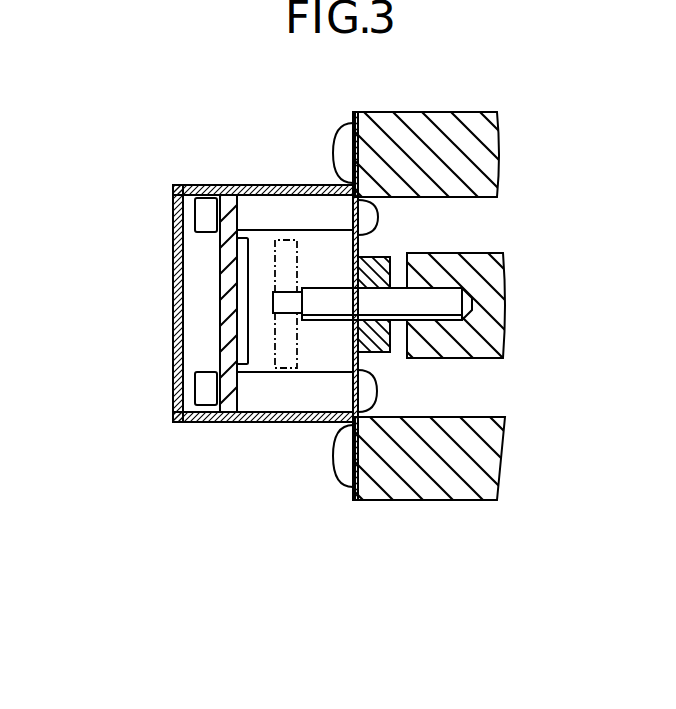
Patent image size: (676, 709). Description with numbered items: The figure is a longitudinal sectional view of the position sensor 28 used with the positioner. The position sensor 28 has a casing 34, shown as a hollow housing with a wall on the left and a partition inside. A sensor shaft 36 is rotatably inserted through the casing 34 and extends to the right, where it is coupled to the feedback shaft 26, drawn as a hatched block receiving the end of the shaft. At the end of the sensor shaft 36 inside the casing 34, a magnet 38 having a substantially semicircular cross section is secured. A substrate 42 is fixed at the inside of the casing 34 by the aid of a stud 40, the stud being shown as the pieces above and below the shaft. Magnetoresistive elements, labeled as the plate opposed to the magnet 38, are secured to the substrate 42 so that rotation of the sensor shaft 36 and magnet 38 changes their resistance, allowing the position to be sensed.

The feedback shaft 26 is at (500, 253).
The position sensor 28 is at (161, 160).
The casing 34 is at (176, 226).
The sensor shaft 36 is at (420, 297).
The magnet 38 is at (285, 240).
The stud 40 is at (263, 212).
The substrate 42 is at (225, 353).